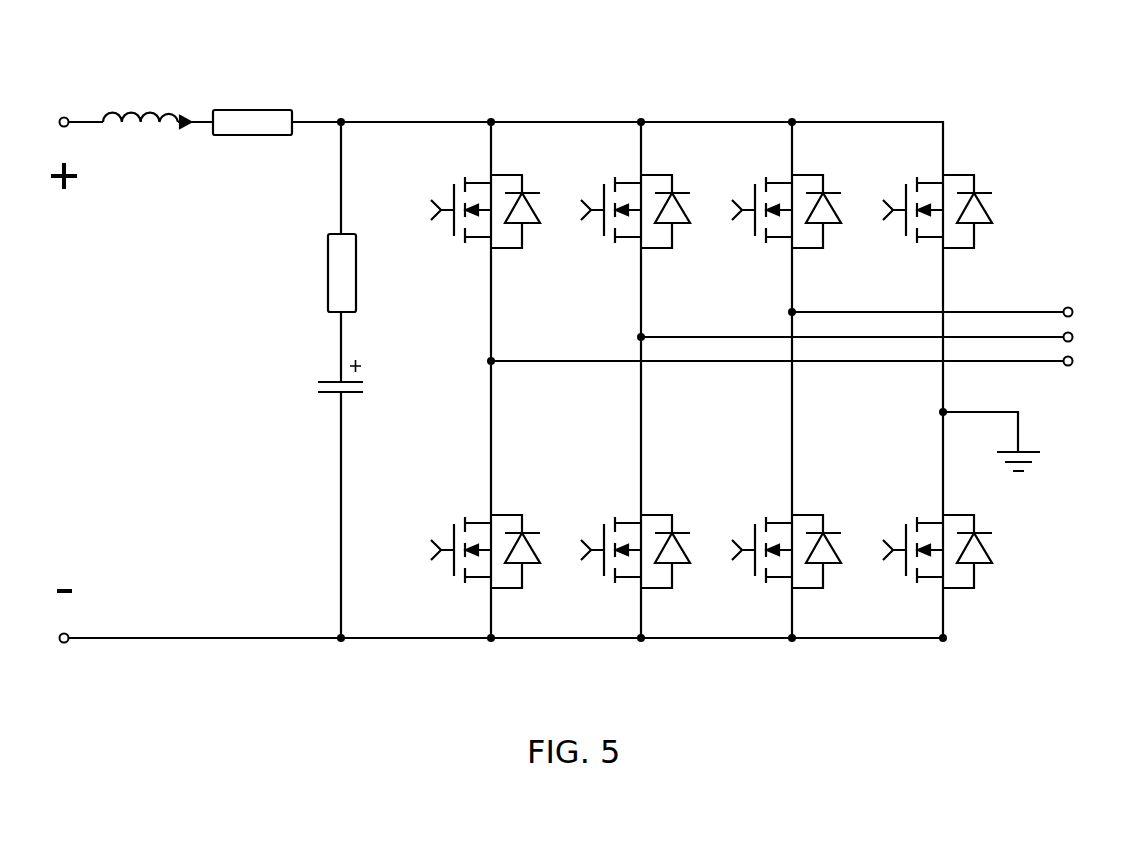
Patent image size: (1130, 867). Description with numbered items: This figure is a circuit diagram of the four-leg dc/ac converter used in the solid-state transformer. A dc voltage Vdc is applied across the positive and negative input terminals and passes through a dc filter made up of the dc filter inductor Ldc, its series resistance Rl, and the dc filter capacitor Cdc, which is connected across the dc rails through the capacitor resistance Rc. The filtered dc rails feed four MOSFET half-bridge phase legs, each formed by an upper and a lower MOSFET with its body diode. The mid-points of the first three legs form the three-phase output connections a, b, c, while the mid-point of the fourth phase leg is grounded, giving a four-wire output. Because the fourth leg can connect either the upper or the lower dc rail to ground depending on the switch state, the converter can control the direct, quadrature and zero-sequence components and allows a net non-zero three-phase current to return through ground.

The dc filter inductor Ldc is at (147, 94).
The inductor resistance Rl is at (252, 97).
The capacitor resistance Rc is at (307, 273).
The dc filter capacitor Cdc is at (299, 384).
The dc voltage Vdc is at (66, 380).
The phase a output a is at (946, 302).
The phase b output b is at (871, 339).
The phase c output c is at (795, 376).